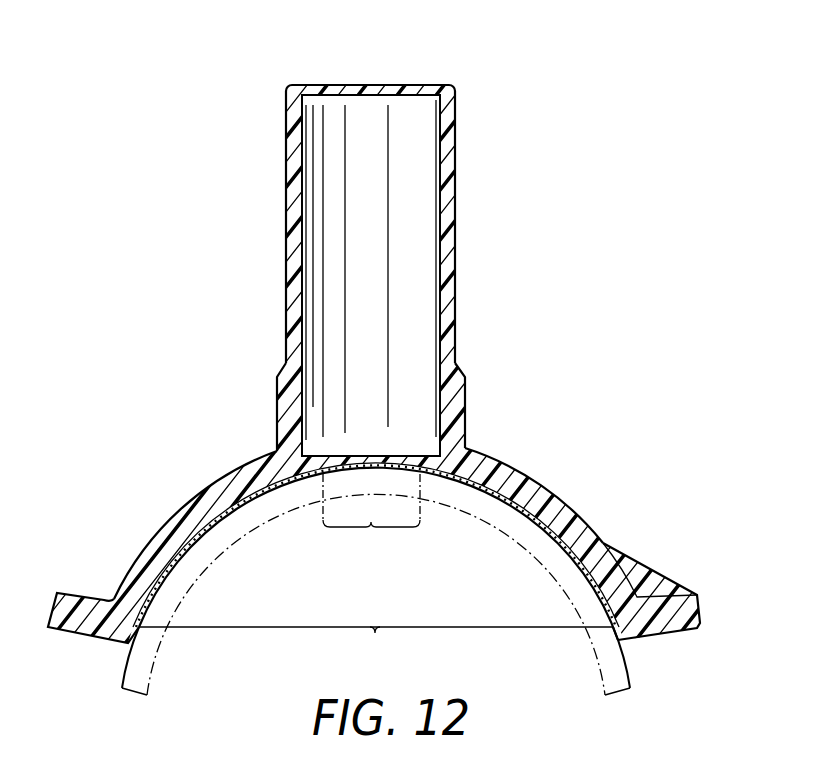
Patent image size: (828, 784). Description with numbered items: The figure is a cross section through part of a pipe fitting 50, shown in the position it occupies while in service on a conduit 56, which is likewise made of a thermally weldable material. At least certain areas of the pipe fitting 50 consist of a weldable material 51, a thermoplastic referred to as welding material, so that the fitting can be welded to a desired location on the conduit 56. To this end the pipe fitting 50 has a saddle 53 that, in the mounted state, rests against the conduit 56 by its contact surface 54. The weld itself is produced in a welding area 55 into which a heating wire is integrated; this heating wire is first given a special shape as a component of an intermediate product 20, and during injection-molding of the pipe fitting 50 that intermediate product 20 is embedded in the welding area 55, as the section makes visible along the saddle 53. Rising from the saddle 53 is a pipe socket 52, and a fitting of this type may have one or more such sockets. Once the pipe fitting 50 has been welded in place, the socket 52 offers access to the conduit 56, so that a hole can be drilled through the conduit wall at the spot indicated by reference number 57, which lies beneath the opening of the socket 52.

The pipe fitting 50 is at (478, 268).
The pipe socket 52 is at (443, 123).
The weldable material 51 is at (458, 418).
The intermediate product 20 is at (208, 527).
The saddle 53 is at (538, 500).
The contact surface 54 is at (620, 642).
The welding area 55 is at (375, 633).
The conduit 56 is at (147, 645).
The drilling spot 57 is at (371, 527).